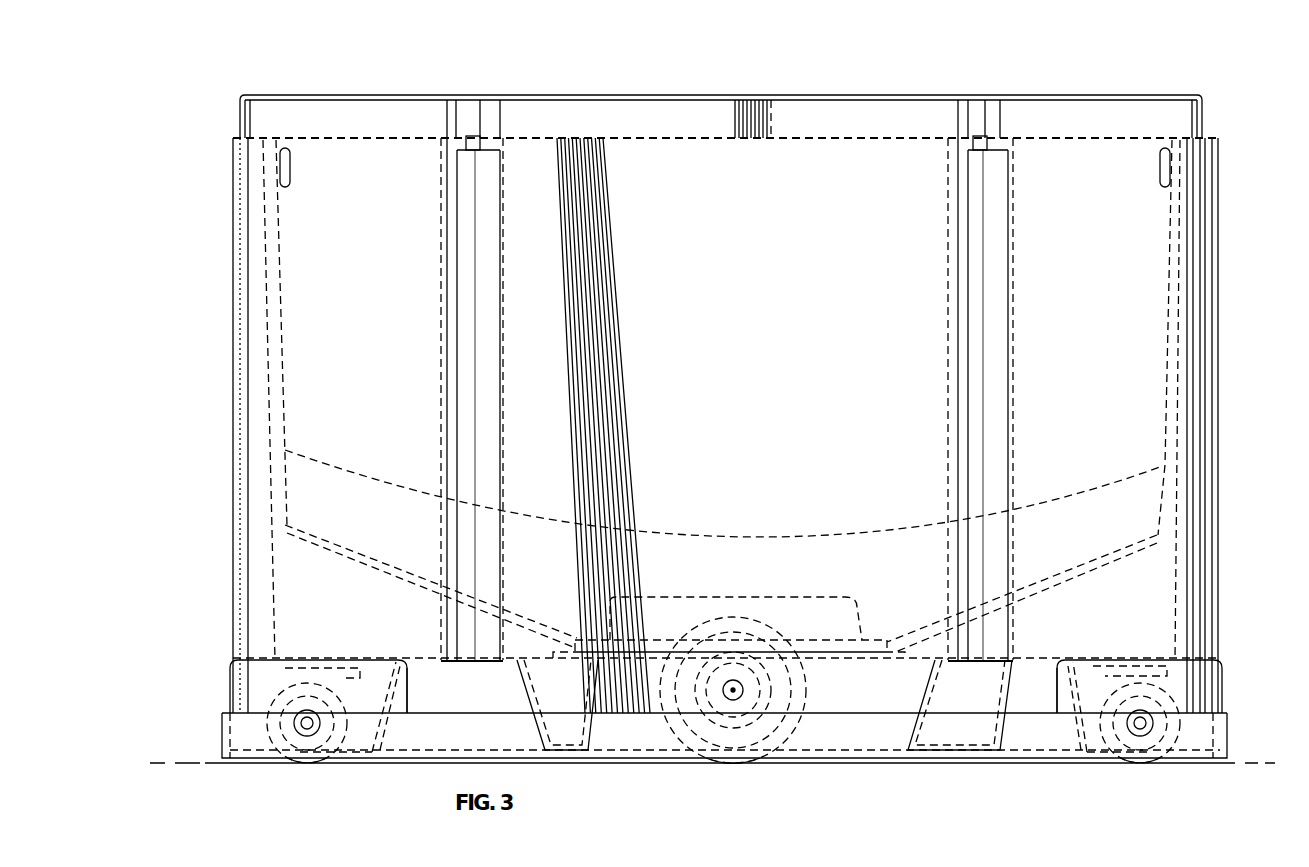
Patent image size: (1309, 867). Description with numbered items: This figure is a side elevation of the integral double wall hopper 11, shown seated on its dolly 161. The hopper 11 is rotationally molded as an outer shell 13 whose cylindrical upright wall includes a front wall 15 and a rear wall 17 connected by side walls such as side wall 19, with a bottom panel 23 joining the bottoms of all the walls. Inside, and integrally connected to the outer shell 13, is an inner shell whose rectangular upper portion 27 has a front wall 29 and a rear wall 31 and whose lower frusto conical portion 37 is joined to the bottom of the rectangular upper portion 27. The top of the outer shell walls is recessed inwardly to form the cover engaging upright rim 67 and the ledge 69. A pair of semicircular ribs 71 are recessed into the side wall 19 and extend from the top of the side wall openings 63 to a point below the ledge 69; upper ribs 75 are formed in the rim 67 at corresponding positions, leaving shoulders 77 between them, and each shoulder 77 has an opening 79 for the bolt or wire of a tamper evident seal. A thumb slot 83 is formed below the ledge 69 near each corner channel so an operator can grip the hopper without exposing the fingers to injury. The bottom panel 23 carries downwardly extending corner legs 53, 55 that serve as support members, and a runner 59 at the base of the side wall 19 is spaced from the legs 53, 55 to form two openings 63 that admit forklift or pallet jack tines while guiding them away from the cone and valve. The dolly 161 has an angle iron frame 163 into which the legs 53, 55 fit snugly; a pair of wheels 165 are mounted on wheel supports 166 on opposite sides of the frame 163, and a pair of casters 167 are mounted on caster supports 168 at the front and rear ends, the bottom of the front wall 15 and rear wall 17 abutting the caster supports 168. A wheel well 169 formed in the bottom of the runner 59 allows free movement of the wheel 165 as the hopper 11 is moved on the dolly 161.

The integral double wall hopper 11 is at (1226, 172).
The outer shell 13 is at (1218, 270).
The front wall 15 is at (235, 366).
The rear wall 17 is at (1218, 366).
The side wall 19 is at (757, 342).
The bottom panel 23 is at (960, 660).
The rectangular upper portion 27 is at (284, 352).
The front wall 29 is at (284, 410).
The rear wall 31 is at (1163, 395).
The lower frusto conical portion 37 is at (398, 568).
The leg 53 is at (232, 690).
The leg 55 is at (1203, 690).
The runner 59 is at (528, 698).
The opening or channel 63 is at (447, 665).
The cover engaging upright rim 67 is at (645, 110).
The ledge 69 is at (717, 137).
The rib 71 is at (448, 263).
The upper rib 75 is at (467, 107).
The shoulder 77 is at (458, 130).
The opening 79 is at (478, 137).
The thumb slot 83 is at (292, 166).
The dolly 161 is at (218, 739).
The frame 163 is at (222, 719).
The wheel 165 is at (725, 762).
The wheel support 166 is at (793, 744).
The caster 167 is at (310, 764).
The caster support 168 is at (407, 681).
The wheel well 169 is at (783, 603).